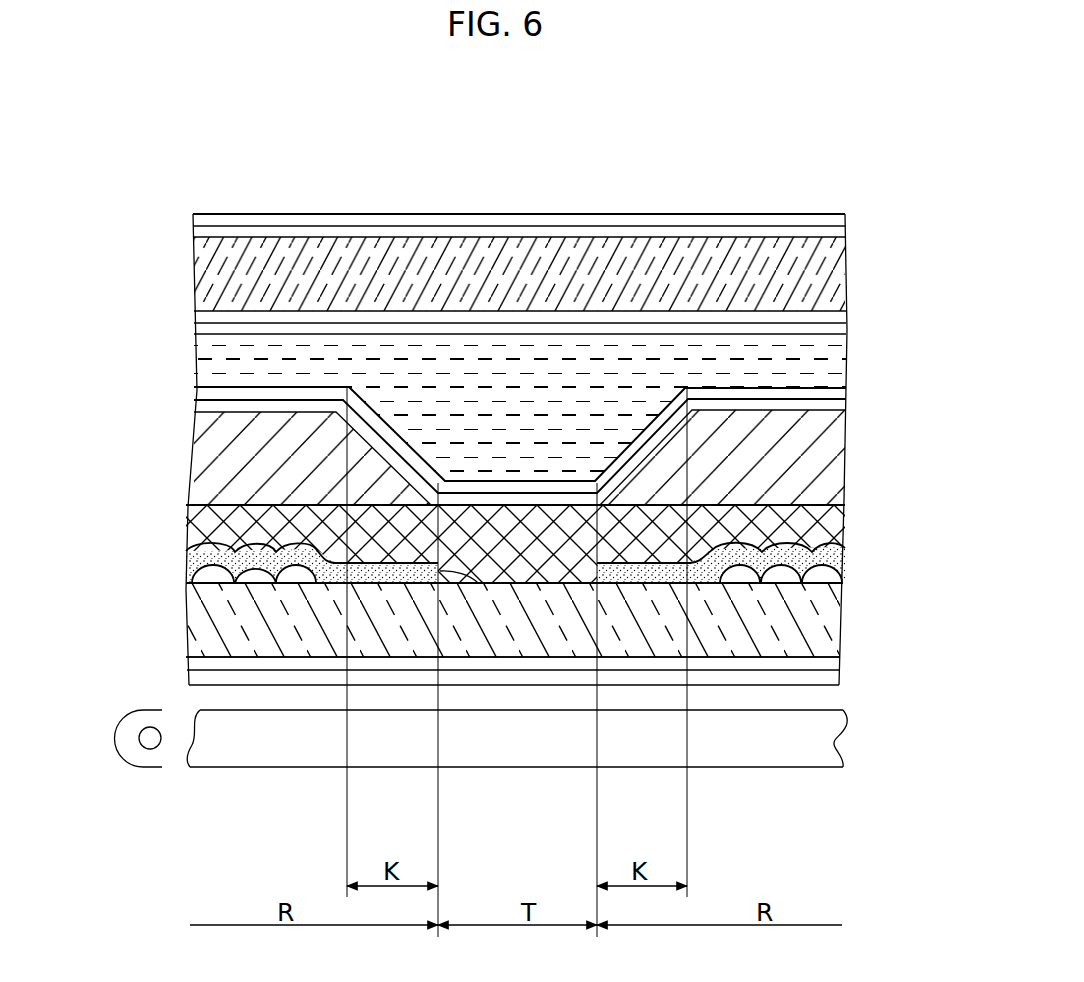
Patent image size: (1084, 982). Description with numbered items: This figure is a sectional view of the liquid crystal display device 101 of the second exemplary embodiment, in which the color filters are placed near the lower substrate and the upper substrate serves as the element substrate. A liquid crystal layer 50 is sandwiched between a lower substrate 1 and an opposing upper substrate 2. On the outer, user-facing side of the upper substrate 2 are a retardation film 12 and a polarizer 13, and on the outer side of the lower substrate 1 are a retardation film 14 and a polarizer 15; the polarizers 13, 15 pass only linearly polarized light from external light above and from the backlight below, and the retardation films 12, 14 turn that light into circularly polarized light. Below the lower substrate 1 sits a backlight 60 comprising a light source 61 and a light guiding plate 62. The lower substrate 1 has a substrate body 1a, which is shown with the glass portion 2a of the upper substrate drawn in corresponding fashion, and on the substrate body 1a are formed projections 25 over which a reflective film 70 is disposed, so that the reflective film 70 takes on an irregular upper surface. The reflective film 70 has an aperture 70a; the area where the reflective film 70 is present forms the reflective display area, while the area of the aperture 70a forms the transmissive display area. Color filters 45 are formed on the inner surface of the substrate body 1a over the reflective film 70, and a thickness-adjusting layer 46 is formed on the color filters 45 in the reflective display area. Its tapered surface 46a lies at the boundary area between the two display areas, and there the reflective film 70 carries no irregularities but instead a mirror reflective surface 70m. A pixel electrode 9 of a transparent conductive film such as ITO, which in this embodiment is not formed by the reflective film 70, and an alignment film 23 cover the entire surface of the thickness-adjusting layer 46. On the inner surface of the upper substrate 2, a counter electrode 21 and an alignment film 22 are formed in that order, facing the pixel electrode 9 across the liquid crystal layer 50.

The liquid crystal display device 101 is at (383, 166).
The lower substrate 1 is at (177, 385).
The substrate body 1a is at (835, 648).
The upper substrate 2 is at (177, 232).
The glass substrate of second substrate 2a is at (828, 272).
The pixel electrode 9 is at (846, 401).
The retardation film 12 is at (846, 229).
The polarizer 13 is at (846, 217).
The retardation film 14 is at (840, 672).
The polarizer 15 is at (840, 687).
The counter electrode 21 is at (846, 324).
The alignment film 22 is at (846, 335).
The alignment film 23 is at (846, 389).
The projections 25 is at (835, 610).
The color filters 45 is at (832, 530).
The thickness-adjusting layer 46 is at (830, 470).
The tapered surface 46a is at (652, 418).
The liquid crystal layer 50 is at (197, 354).
The backlight 60 is at (143, 695).
The light source 61 is at (146, 757).
The light guiding plate 62 is at (835, 742).
The reflective film 70 is at (832, 570).
The aperture 70a is at (480, 580).
The mirror reflective surface 70m is at (664, 572).